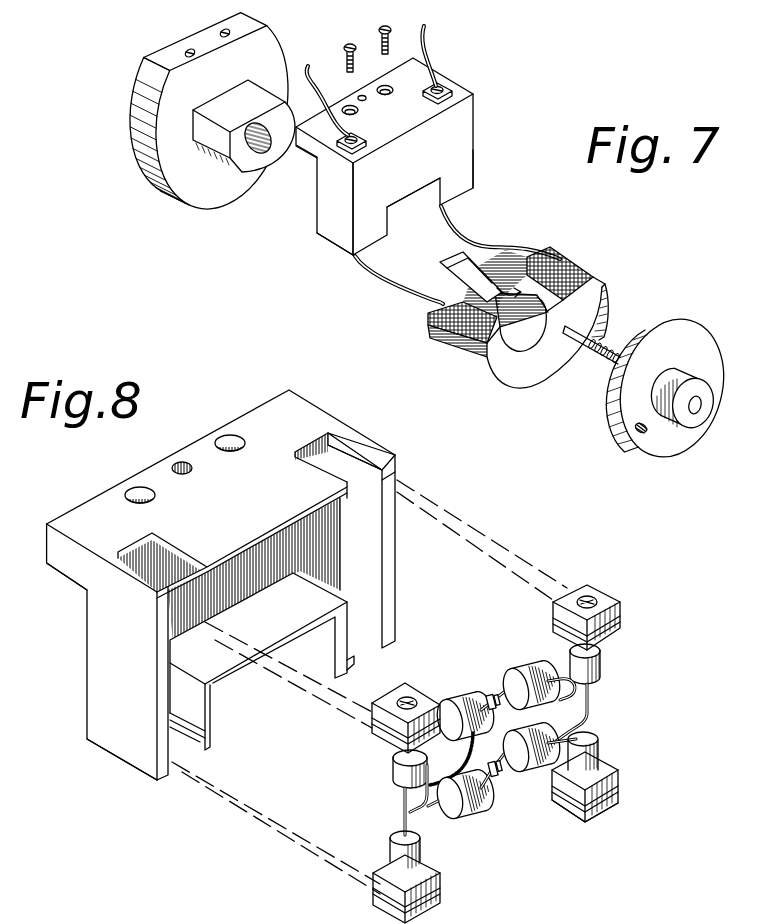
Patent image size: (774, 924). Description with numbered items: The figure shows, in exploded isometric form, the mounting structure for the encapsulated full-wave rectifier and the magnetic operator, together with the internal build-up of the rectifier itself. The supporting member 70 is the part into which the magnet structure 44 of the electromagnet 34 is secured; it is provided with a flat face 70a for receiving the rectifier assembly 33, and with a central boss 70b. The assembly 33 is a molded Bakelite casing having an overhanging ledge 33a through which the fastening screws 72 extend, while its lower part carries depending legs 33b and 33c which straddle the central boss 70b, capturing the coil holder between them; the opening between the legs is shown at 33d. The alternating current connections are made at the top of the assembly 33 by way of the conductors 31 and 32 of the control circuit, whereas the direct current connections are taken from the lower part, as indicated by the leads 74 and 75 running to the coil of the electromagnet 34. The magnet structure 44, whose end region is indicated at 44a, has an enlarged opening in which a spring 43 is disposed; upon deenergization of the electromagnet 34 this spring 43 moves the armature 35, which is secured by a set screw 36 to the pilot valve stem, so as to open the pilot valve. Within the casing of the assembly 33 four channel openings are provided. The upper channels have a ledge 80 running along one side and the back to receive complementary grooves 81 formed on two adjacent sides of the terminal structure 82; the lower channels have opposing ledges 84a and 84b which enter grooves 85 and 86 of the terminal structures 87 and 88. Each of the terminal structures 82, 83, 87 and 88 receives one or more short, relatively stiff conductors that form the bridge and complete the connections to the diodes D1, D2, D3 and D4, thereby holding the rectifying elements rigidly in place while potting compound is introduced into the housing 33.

In FIG. 7, the supporting member 70 is at (135, 118).
In FIG. 7, the flat face 70a is at (170, 58).
In FIG. 7, the central boss 70b is at (238, 88).
In FIG. 7, the fastening screws 72 is at (364, 22).
In FIG. 7, the conductor 31 is at (323, 91).
In FIG. 7, the conductor 32 is at (432, 34).
In FIG. 7, the rectifier assembly 33 is at (474, 114).
In FIG. 8, the rectifier assembly 33 is at (60, 669).
In FIG. 7, the overhanging ledge 33a is at (311, 152).
In FIG. 8, the overhanging ledge 33a is at (70, 570).
In FIG. 7, the depending leg 33b is at (346, 243).
In FIG. 8, the depending leg 33b is at (213, 763).
In FIG. 7, the depending leg 33c is at (474, 183).
In FIG. 8, the depending leg 33c is at (352, 676).
In FIG. 7, the housing slot 33d is at (417, 203).
In FIG. 7, the lead 75 is at (482, 230).
In FIG. 7, the lead 74 is at (394, 284).
In FIG. 7, the magnet structure 44 is at (537, 258).
In FIG. 7, the electromagnet 34 is at (570, 262).
In FIG. 7, the coil end 44a is at (605, 290).
In FIG. 7, the spring 43 is at (603, 372).
In FIG. 7, the armature 35 is at (714, 332).
In FIG. 7, the set screw 36 is at (643, 434).
In FIG. 8, the ledge 80 is at (364, 465).
In FIG. 8, the ledge 84a is at (352, 640).
In FIG. 8, the ledge 84b is at (352, 660).
In FIG. 8, the terminal structure 82 is at (590, 585).
In FIG. 8, the grooves 81 is at (615, 628).
In FIG. 8, the terminal structure 83 is at (374, 724).
In FIG. 8, the rectifying element D1 is at (525, 668).
In FIG. 8, the rectifying element D2 is at (522, 775).
In FIG. 8, the rectifying element D3 is at (462, 700).
In FIG. 8, the rectifying element D4 is at (478, 815).
In FIG. 8, the groove 85 is at (620, 780).
In FIG. 8, the groove 86 is at (575, 790).
In FIG. 8, the terminal structure 87 is at (600, 812).
In FIG. 8, the terminal structure 88 is at (432, 872).